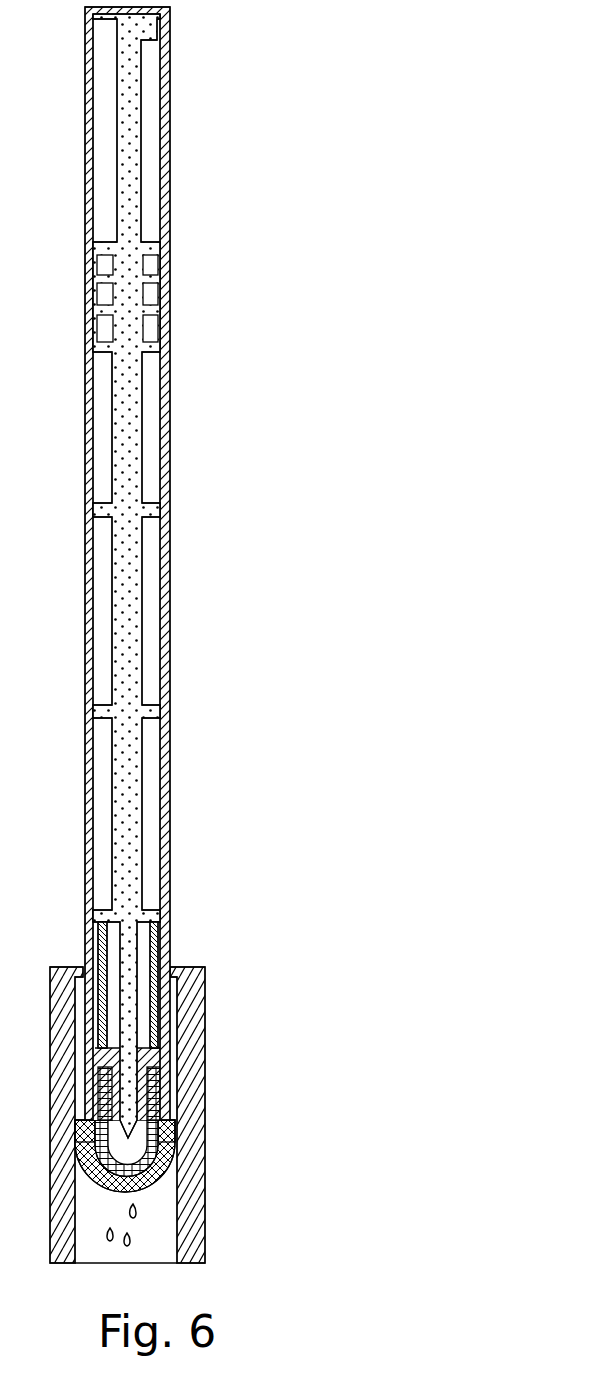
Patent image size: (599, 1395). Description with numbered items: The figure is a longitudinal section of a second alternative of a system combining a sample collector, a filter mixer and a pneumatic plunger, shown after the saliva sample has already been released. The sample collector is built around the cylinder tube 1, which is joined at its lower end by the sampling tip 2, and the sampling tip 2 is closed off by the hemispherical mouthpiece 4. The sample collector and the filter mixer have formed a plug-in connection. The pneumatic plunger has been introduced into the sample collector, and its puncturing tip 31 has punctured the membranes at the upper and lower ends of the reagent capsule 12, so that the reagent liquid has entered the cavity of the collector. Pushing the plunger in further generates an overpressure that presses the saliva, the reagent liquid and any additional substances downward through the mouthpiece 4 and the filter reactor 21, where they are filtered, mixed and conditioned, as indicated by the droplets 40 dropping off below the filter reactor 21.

The cylinder tube 1 is at (170, 803).
The reagent capsule 12 is at (170, 955).
The sampling tip 2 is at (155, 1070).
The puncturing tip 31 is at (155, 1110).
The mouthpiece 4 is at (158, 1142).
The filter reactor 21 is at (172, 1170).
The droplets 40 is at (128, 1242).